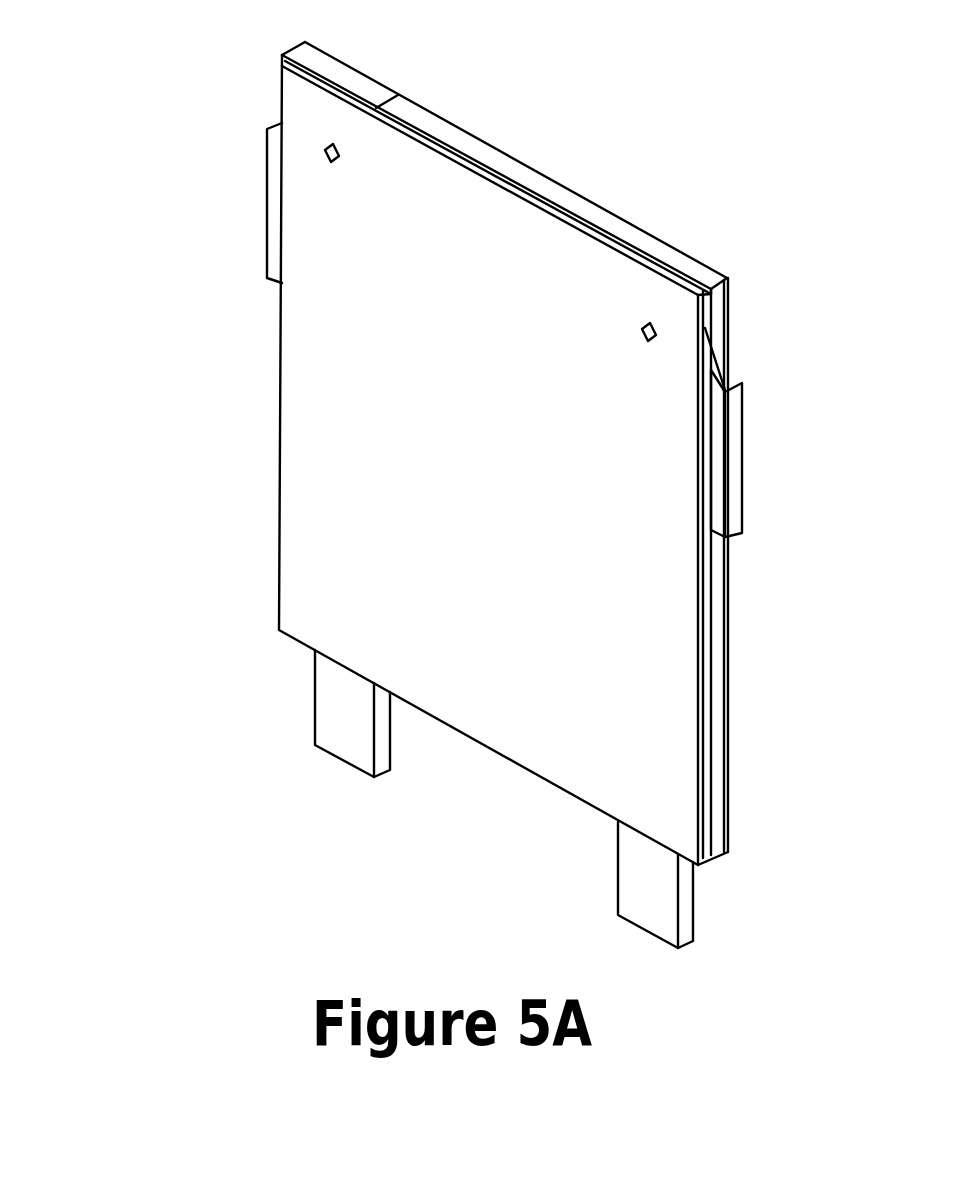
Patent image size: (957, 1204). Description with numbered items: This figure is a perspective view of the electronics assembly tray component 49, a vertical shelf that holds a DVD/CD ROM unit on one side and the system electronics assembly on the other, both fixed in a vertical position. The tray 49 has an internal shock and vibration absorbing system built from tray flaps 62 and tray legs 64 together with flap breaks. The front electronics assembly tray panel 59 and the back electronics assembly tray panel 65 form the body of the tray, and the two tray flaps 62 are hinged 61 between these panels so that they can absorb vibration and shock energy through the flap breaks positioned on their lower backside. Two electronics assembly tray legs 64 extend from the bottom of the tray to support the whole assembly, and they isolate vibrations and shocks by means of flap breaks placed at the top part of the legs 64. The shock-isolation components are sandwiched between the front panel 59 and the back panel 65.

The electronics assembly tray component 49 is at (580, 118).
The front electronics assembly tray panel 59 is at (633, 228).
The hinge 61 is at (323, 150).
The tray flap 62 is at (253, 163).
The electronics assembly tray leg 64 is at (313, 732).
The back electronics assembly tray panel 65 is at (388, 94).